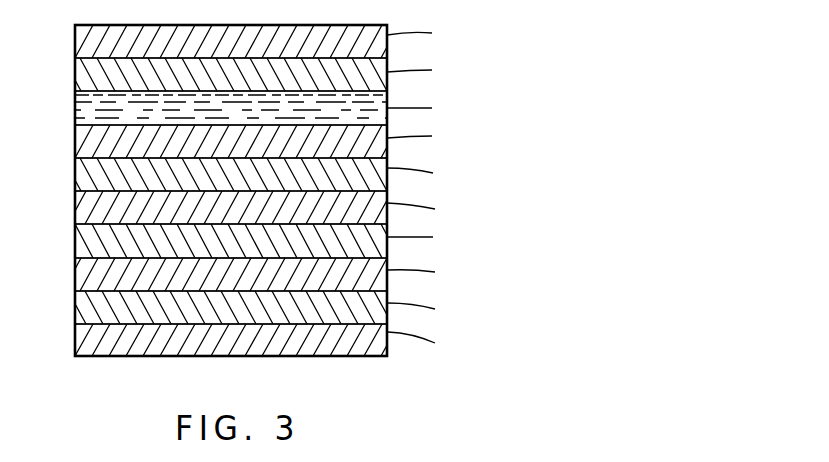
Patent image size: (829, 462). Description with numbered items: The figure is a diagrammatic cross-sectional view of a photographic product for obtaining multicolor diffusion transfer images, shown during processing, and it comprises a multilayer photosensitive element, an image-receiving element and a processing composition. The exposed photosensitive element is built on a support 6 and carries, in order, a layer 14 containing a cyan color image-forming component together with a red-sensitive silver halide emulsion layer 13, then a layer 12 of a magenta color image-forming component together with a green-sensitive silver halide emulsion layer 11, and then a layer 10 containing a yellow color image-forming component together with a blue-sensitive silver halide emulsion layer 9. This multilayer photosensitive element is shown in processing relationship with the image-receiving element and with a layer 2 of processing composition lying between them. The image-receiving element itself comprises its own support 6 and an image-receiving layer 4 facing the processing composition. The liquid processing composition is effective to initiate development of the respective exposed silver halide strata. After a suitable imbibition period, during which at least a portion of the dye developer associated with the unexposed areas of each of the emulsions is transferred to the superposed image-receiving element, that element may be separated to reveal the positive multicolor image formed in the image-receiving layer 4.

The support 6 is at (95, 37).
The image-receiving layer 4 is at (92, 71).
The layer of processing composition 2 is at (90, 108).
The blue-sensitive silver halide emulsion layer 9 is at (88, 144).
The layer containing a yellow color image-forming component 10 is at (88, 182).
The green-sensitive silver halide emulsion layer 11 is at (92, 210).
The layer of a magenta color image-forming component 12 is at (87, 247).
The red-sensitive silver halide emulsion layer 13 is at (90, 275).
The layer containing a cyan color image-forming component 14 is at (88, 312).